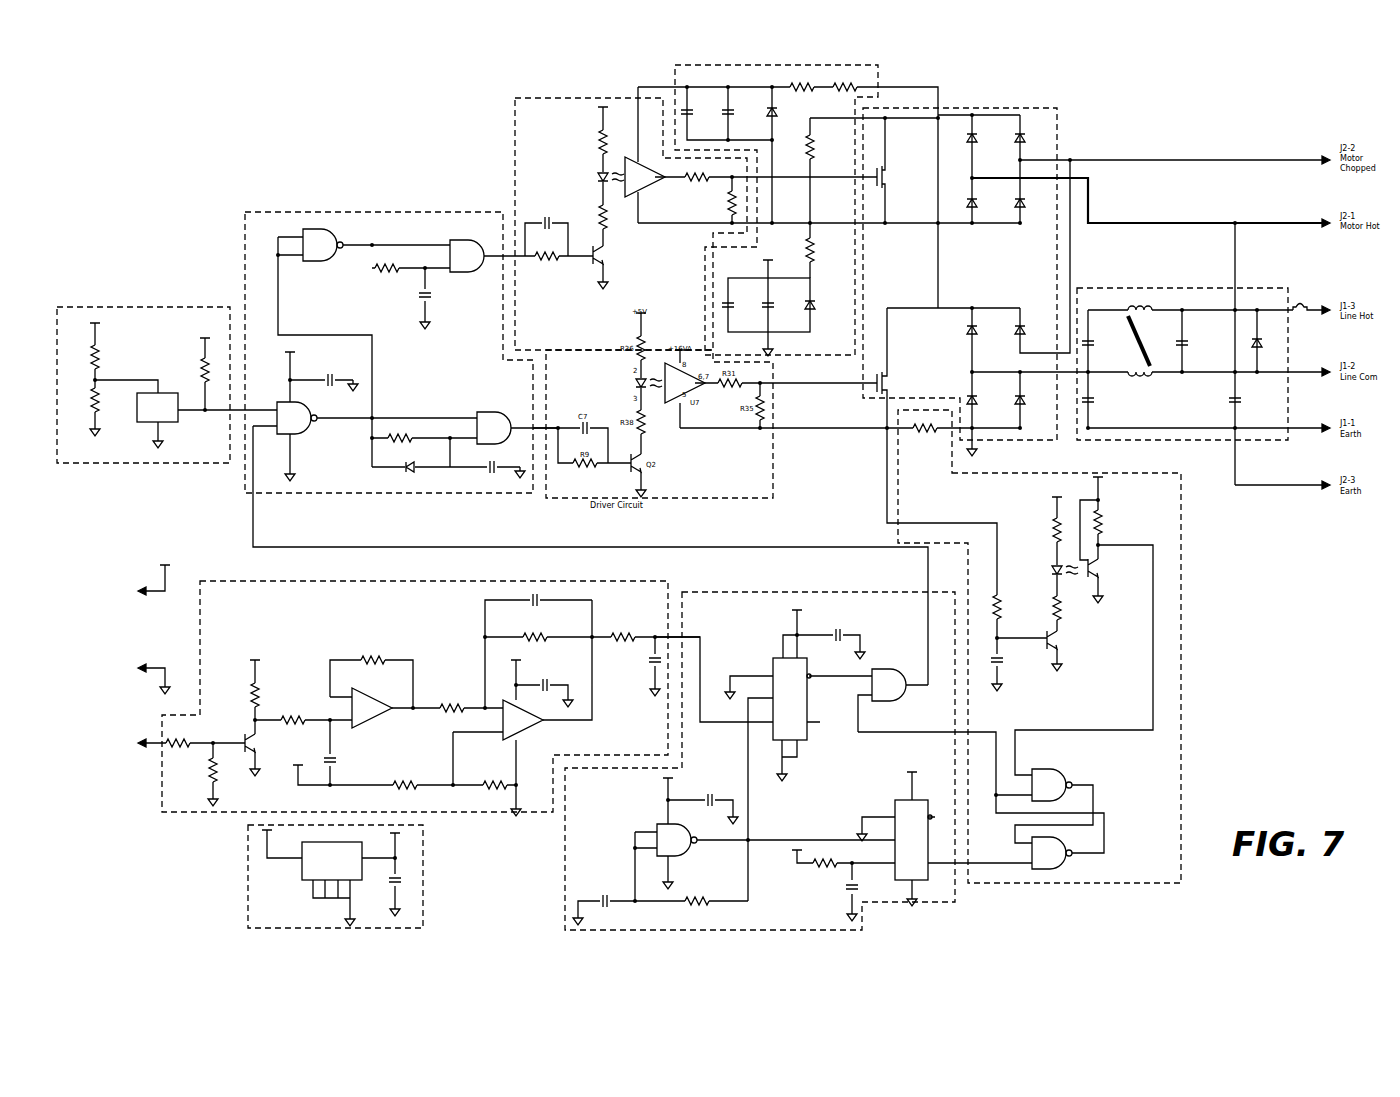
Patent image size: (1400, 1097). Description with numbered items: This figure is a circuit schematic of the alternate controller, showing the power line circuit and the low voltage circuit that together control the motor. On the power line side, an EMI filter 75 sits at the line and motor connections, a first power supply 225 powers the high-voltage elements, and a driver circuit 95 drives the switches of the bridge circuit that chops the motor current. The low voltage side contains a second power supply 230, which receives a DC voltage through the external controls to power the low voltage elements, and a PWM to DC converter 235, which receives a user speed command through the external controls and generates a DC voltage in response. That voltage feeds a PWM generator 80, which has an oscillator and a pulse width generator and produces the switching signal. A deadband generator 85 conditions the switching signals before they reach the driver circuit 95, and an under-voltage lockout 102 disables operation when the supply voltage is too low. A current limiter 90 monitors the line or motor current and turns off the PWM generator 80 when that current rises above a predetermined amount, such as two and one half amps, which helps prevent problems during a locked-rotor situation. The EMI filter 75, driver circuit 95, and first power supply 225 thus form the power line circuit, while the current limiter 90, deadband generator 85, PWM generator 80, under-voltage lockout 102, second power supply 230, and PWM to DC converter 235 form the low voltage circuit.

The under-voltage lockout circuit 102 is at (196, 305).
The deadband generator 85 is at (375, 212).
The driver circuit 95 is at (515, 163).
The first power supply 225 is at (683, 65).
The EMI filter 75 is at (1215, 442).
The current limiter 90 is at (1183, 625).
The PWM generator 80 is at (562, 842).
The PWM to DC converter 235 is at (160, 793).
The second power supply 230 is at (246, 895).